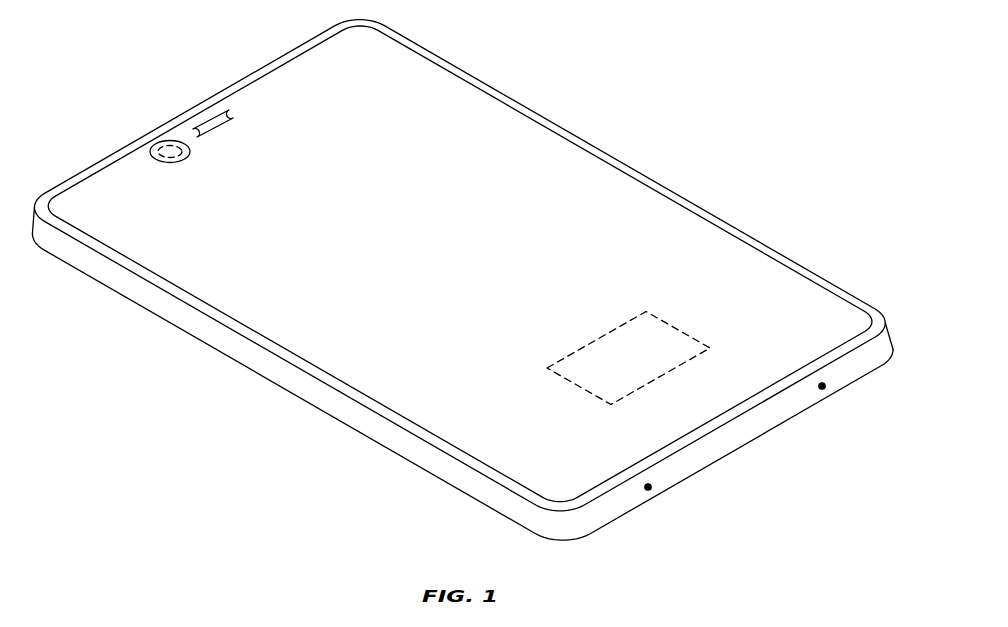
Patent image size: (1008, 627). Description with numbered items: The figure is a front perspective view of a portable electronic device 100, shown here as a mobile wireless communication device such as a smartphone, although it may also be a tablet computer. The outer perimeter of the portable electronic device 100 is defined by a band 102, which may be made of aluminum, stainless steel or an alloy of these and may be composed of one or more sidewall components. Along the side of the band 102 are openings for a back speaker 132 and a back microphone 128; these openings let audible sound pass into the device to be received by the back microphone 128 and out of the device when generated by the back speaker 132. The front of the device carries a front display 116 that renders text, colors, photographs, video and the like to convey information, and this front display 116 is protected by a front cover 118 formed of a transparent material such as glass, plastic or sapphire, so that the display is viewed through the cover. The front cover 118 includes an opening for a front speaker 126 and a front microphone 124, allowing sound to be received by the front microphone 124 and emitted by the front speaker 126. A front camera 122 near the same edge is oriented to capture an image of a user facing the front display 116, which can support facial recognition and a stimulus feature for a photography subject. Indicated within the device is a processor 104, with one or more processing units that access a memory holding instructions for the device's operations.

The portable electronic device 100 is at (843, 218).
The band 102 is at (355, 418).
The processor 104 is at (673, 327).
The front display 116 is at (622, 188).
The front cover 118 is at (444, 249).
The front camera 122 is at (159, 140).
The front microphone 124 is at (231, 110).
The front speaker 126 is at (200, 115).
The back microphone 128 is at (826, 391).
The back speaker 132 is at (652, 492).